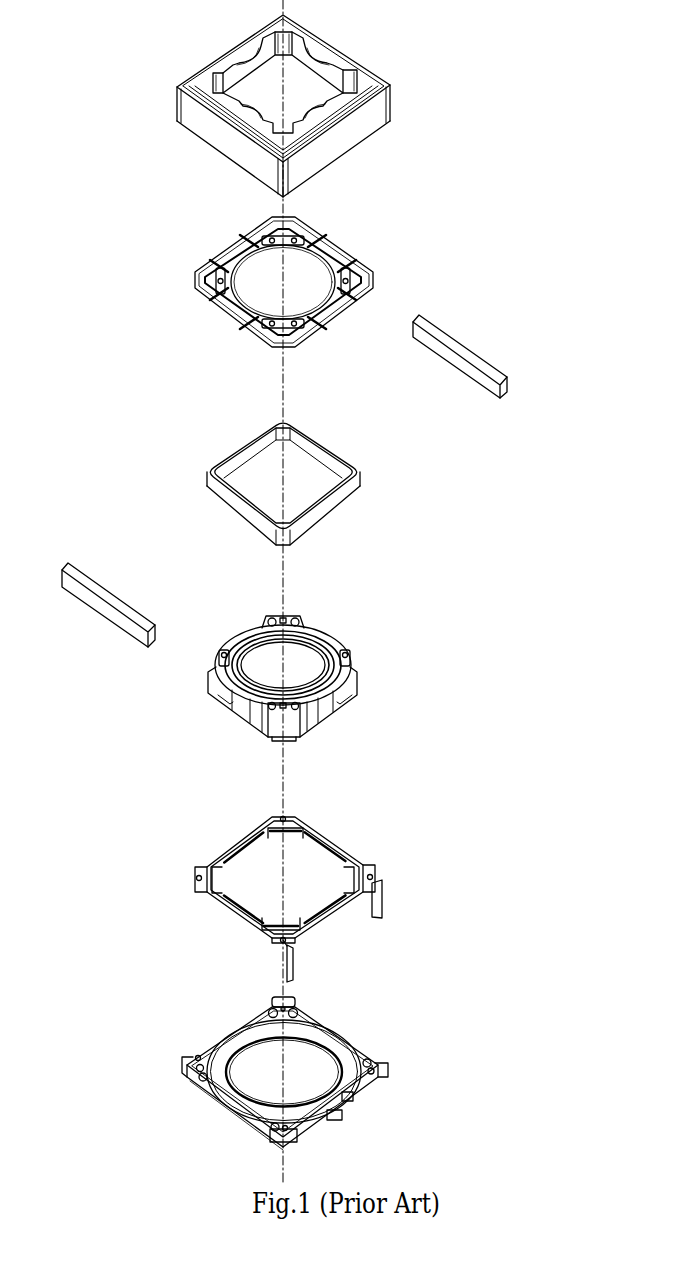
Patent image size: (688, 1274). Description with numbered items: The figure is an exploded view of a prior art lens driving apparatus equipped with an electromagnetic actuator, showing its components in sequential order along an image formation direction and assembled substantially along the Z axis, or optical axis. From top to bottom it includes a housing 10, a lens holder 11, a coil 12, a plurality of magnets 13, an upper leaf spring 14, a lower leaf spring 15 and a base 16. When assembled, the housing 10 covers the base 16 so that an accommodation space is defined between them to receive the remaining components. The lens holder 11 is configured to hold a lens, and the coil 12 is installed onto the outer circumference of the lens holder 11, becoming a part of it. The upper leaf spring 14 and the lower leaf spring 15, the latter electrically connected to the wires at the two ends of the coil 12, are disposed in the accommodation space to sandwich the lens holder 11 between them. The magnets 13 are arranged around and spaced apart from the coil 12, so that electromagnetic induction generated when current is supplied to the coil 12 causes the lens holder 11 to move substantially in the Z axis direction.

The housing 10 is at (382, 108).
The lens holder 11 is at (353, 660).
The coil 12 is at (353, 468).
The magnets 13 is at (468, 350).
The upper leaf spring 14 is at (357, 260).
The lower leaf spring 15 is at (368, 868).
The base 16 is at (360, 1052).